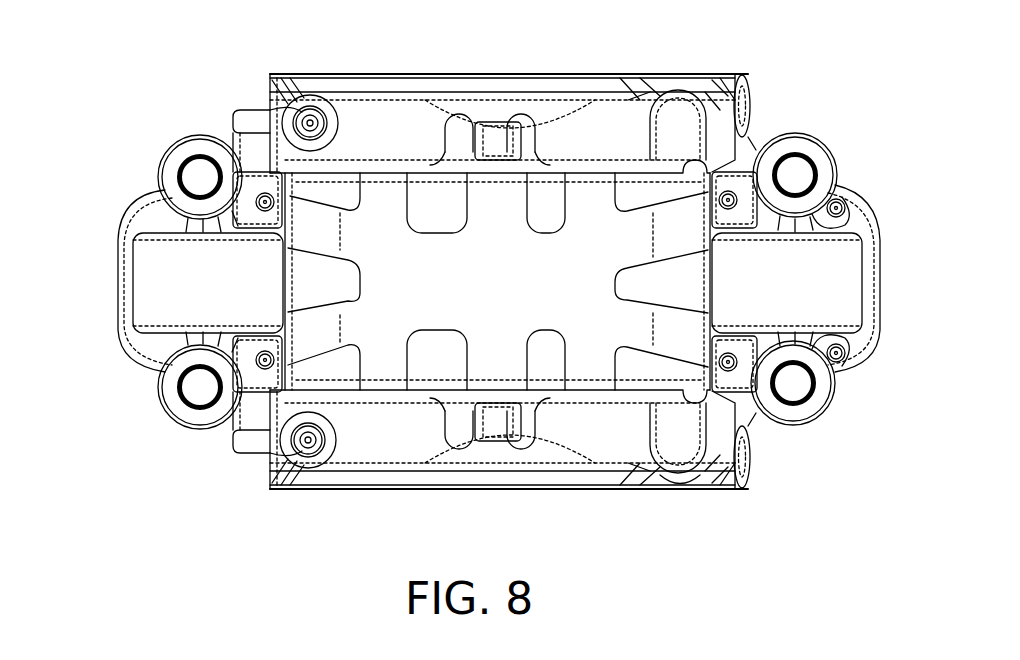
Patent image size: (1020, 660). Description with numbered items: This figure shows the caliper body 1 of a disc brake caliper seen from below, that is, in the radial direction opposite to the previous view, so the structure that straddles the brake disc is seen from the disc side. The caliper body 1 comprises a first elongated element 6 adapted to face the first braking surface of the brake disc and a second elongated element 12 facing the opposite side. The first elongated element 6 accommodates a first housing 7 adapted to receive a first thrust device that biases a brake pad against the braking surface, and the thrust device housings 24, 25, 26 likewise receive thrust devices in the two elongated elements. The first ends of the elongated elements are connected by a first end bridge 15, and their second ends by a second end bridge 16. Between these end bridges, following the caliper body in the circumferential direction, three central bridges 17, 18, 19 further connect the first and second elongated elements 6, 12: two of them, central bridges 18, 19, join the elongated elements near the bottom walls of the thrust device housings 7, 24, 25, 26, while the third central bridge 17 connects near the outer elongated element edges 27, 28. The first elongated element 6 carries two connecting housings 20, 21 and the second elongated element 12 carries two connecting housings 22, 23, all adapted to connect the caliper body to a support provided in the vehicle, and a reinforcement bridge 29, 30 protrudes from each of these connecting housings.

The caliper body 1 is at (776, 60).
The first elongated element 6 is at (487, 77).
The first housing 7 is at (350, 118).
The second elongated element 12 is at (603, 478).
The first end bridge 15 is at (137, 270).
The second end bridge 16 is at (840, 284).
The central bridge 17 is at (510, 355).
The central bridge 18 is at (378, 343).
The central bridge 19 is at (750, 455).
The connecting housing of first elongated element 20 is at (197, 180).
The connecting housing of first elongated element 21 is at (800, 173).
The connecting housing of second elongated element 22 is at (190, 393).
The connecting housing of second elongated element 23 is at (808, 392).
The thrust device housing 24 is at (388, 443).
The thrust device housing 25 is at (595, 136).
The thrust device housing 26 is at (665, 472).
The outer elongated element edge 27 is at (414, 75).
The outer elongated element edge 28 is at (361, 489).
The reinforcement bridge 29 is at (85, 358).
The reinforcement bridge 30 is at (834, 373).